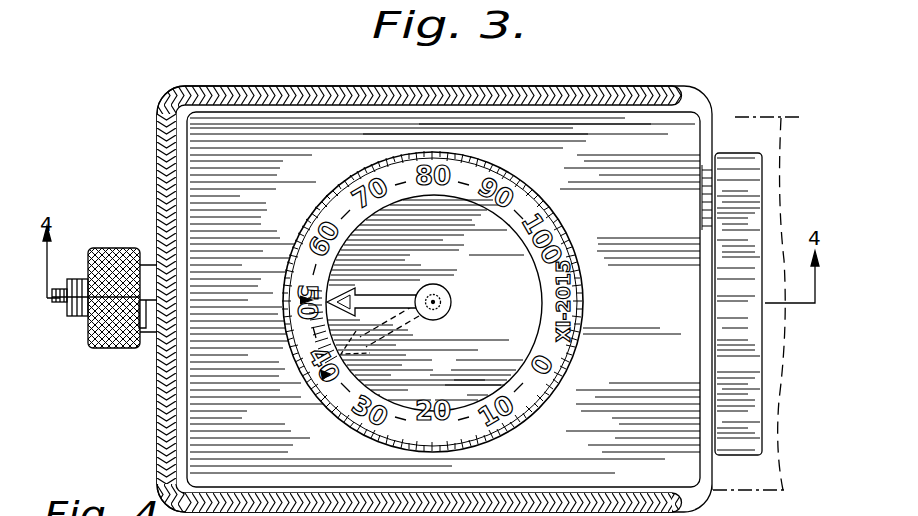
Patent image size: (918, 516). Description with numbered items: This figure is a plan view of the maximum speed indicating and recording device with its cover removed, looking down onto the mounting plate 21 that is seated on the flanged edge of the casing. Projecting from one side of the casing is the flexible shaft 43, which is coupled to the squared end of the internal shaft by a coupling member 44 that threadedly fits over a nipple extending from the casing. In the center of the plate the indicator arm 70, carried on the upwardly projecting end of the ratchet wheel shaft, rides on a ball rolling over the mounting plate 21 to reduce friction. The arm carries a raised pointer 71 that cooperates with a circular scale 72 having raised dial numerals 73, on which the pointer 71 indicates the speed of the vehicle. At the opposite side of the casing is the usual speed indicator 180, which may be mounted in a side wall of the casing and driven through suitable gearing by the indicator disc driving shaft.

The mounting plate 21 is at (662, 160).
The speed indicator 180 is at (735, 153).
The coupling member 44 is at (113, 348).
The flexible shaft 43 is at (60, 302).
The indicator arm 70 is at (418, 292).
The pointer portion 71 is at (383, 308).
The circular scale 72 is at (306, 329).
The dial numerals 73 is at (302, 300).